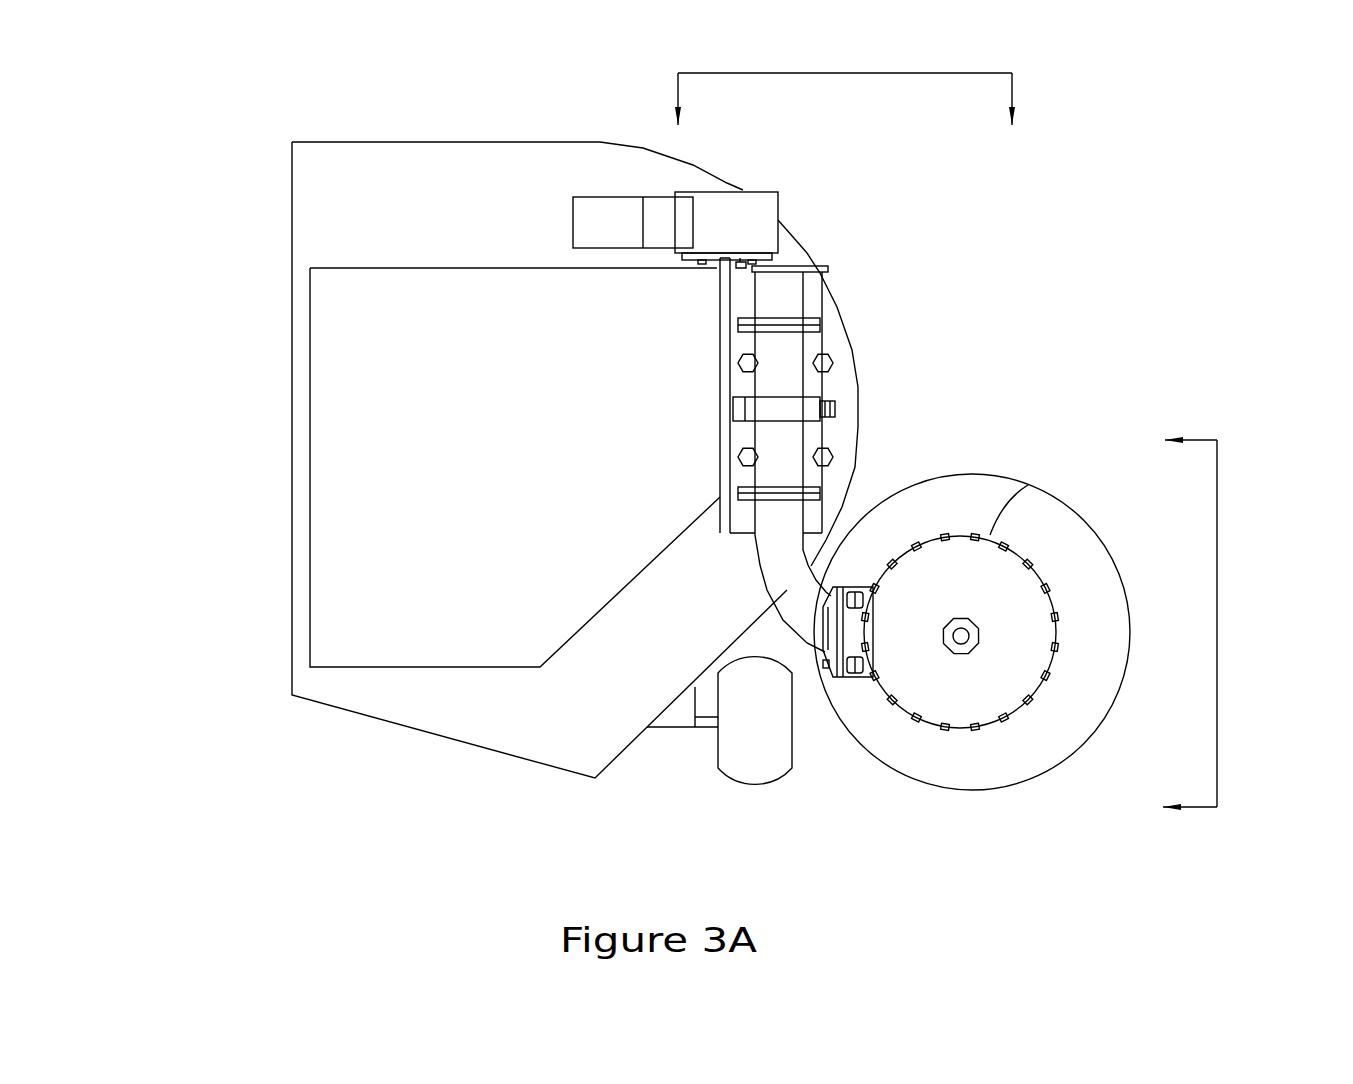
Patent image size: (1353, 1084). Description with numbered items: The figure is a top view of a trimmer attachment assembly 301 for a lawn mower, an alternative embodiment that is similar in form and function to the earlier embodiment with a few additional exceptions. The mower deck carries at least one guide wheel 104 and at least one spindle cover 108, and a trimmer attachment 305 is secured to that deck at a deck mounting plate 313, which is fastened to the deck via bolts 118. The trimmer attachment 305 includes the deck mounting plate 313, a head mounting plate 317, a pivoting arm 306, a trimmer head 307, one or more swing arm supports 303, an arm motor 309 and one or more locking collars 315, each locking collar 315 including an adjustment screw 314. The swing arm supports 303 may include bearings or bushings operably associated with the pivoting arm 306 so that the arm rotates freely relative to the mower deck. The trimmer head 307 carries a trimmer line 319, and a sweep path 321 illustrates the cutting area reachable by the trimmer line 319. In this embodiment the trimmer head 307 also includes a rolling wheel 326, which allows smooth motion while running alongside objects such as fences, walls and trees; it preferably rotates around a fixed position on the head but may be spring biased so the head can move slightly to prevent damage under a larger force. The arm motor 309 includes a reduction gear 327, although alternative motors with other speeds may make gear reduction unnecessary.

The trimmer attachment assembly 301 is at (270, 127).
The spindle cover 108 is at (385, 633).
The guide wheel 104 is at (768, 778).
The bolts 118 is at (740, 366).
The swing arm supports 303 is at (820, 322).
The trimmer attachment 305 is at (845, 80).
The pivoting arm 306 is at (720, 687).
The trimmer head 307 is at (1222, 623).
The arm motor 309 is at (748, 192).
The deck mounting plate 313 is at (845, 420).
The adjustment screw 314 is at (838, 408).
The locking collar 315 is at (733, 410).
The head mounting plate 317 is at (852, 632).
The trimmer line 319 is at (1003, 512).
The sweep path 321 is at (1092, 548).
The rolling wheel 326 is at (1015, 713).
The reduction gear 327 is at (805, 268).